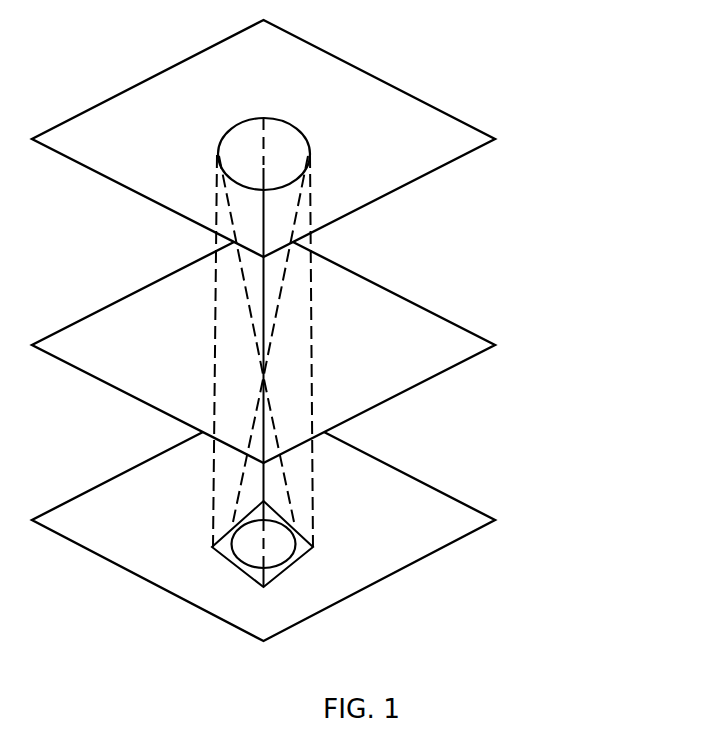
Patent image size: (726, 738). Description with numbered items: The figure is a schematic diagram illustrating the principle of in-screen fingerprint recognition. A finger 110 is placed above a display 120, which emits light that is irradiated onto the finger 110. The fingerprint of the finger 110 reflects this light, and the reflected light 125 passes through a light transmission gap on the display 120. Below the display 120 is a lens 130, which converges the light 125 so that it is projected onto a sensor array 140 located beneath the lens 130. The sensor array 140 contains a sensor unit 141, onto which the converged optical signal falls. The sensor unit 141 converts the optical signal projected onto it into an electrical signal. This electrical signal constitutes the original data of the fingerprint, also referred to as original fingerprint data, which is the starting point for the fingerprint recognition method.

The finger 110 is at (303, 131).
The display 120 is at (370, 73).
The light 125 is at (312, 377).
The lens 130 is at (365, 278).
The sensor array 140 is at (362, 453).
The sensor unit 141 is at (287, 567).